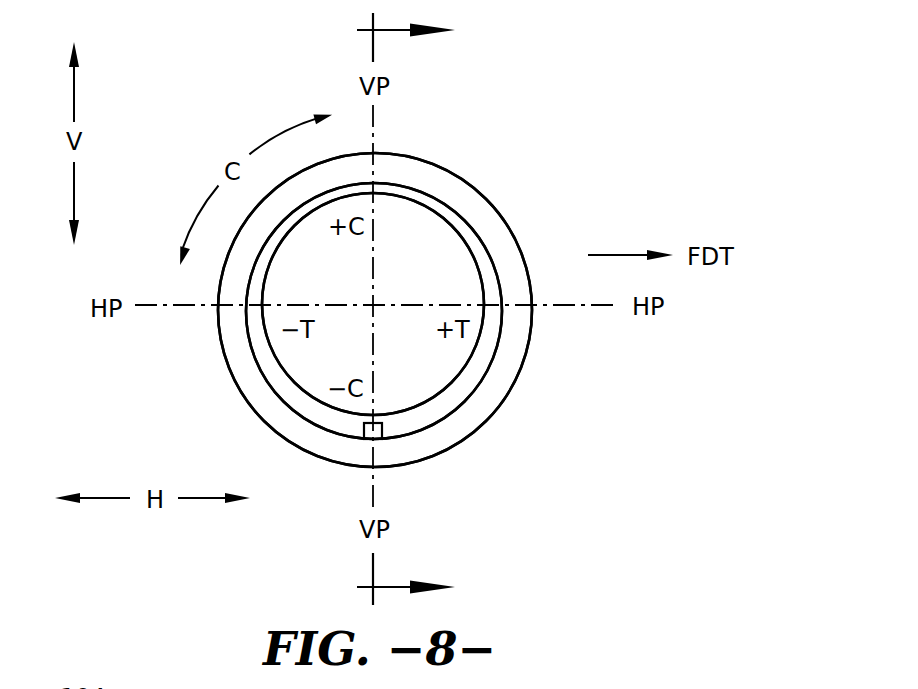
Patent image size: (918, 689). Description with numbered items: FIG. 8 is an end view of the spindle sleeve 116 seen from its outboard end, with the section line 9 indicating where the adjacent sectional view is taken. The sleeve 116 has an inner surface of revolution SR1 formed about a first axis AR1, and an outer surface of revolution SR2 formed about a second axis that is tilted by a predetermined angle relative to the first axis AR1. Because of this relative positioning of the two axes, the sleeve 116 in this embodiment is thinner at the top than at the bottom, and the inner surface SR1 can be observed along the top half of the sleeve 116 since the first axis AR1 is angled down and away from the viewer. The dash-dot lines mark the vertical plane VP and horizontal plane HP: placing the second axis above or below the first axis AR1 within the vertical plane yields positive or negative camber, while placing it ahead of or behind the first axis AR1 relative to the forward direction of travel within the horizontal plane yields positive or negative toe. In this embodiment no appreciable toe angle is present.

The spindle sleeve 116 is at (416, 251).
The section line for FIG. 9 is at (423, 310).
The inner surface of revolution SR1 is at (440, 233).
The outer surface of revolution SR2 is at (482, 180).
The first axis AR1 is at (392, 314).